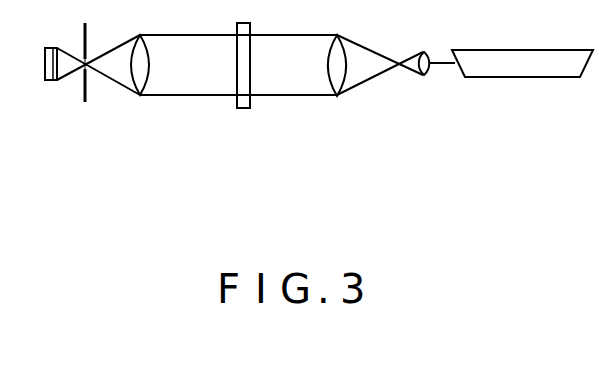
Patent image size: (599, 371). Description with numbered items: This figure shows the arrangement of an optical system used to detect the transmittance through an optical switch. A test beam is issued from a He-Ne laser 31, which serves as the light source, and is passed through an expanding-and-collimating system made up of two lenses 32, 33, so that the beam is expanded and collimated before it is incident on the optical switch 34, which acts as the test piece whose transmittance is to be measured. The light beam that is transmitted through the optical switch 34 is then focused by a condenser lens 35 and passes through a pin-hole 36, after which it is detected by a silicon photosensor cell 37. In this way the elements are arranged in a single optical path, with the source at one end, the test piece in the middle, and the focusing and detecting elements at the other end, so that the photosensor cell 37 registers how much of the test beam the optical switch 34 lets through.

The He-Ne laser 31 is at (517, 78).
The lens 32 is at (425, 76).
The lens 33 is at (335, 97).
The optical switch 34 is at (242, 109).
The condenser lens 35 is at (137, 97).
The pin-hole 36 is at (85, 104).
The silicon photosensor cell 37 is at (46, 82).